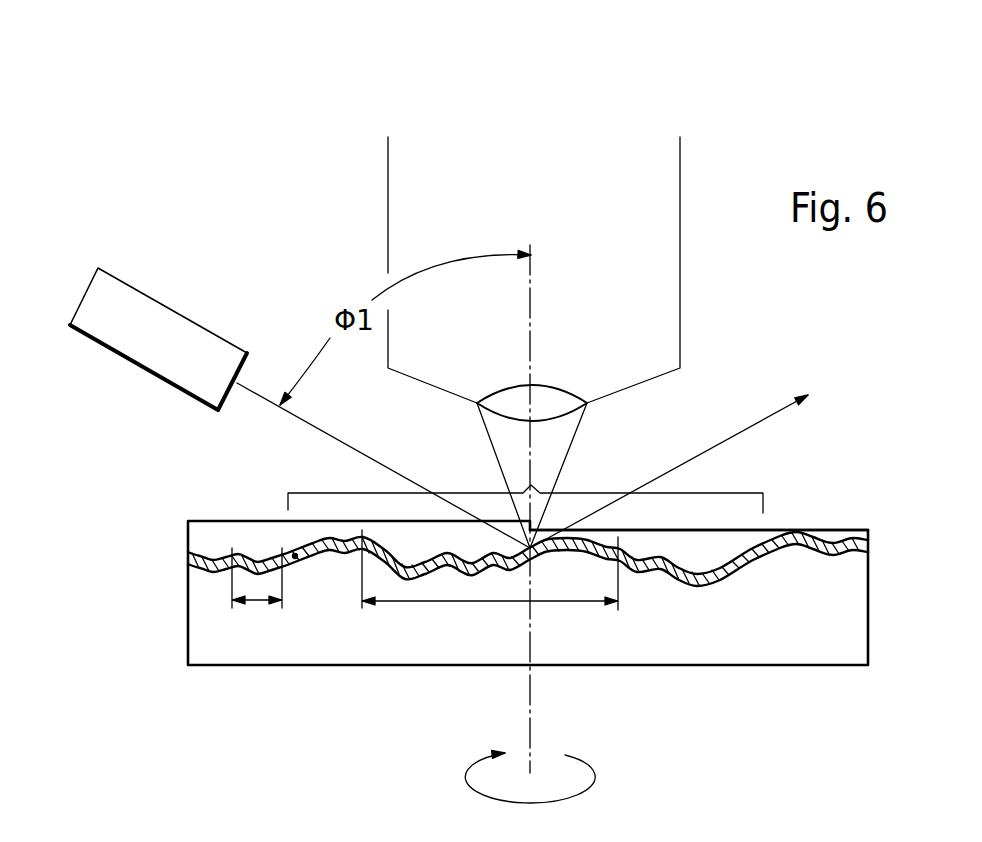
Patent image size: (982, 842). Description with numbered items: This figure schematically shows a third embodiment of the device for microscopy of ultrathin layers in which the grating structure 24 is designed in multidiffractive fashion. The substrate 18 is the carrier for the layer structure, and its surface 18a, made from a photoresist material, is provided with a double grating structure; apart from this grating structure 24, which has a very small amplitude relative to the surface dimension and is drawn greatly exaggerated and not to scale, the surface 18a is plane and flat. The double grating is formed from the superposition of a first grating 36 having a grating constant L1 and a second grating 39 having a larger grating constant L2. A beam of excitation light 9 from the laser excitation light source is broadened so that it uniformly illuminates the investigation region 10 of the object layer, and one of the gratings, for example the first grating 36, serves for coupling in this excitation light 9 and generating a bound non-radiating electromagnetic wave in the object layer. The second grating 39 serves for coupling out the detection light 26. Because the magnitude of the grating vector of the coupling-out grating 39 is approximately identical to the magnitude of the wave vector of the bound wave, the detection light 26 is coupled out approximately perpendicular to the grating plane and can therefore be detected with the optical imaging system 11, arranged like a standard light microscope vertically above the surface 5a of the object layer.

The optical imaging system 11 is at (628, 273).
The detection light 26 is at (557, 450).
The investigation region 10 is at (525, 483).
The excitation light 9 is at (358, 452).
The substrate 18 is at (400, 655).
The surface of the substrate 18a is at (295, 555).
The grating structure 24 is at (692, 560).
The surface of the object layer 5a is at (660, 528).
The second grating 39 is at (257, 594).
The first grating 36 is at (490, 583).